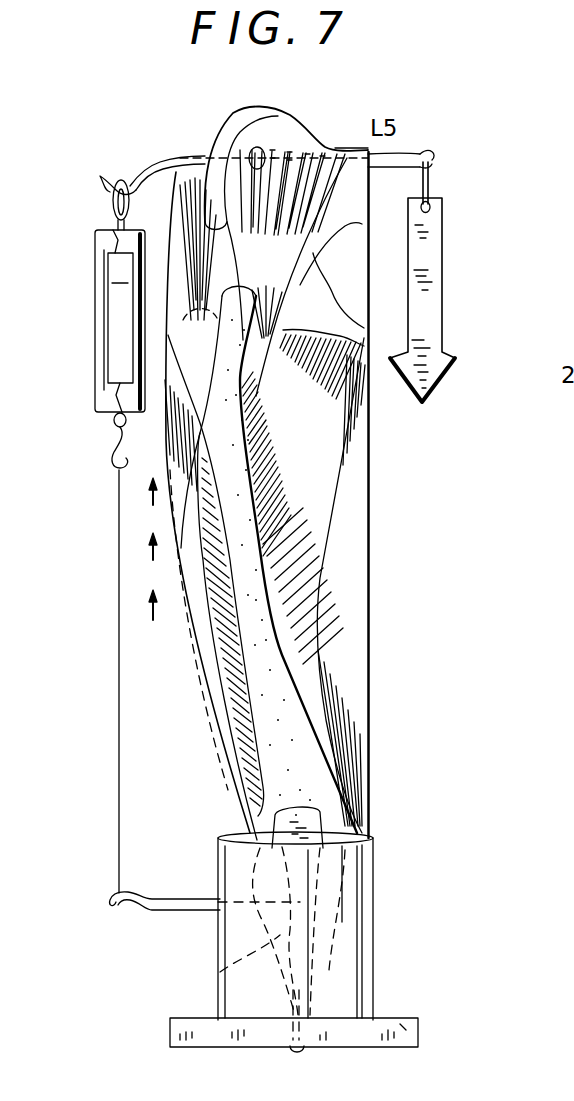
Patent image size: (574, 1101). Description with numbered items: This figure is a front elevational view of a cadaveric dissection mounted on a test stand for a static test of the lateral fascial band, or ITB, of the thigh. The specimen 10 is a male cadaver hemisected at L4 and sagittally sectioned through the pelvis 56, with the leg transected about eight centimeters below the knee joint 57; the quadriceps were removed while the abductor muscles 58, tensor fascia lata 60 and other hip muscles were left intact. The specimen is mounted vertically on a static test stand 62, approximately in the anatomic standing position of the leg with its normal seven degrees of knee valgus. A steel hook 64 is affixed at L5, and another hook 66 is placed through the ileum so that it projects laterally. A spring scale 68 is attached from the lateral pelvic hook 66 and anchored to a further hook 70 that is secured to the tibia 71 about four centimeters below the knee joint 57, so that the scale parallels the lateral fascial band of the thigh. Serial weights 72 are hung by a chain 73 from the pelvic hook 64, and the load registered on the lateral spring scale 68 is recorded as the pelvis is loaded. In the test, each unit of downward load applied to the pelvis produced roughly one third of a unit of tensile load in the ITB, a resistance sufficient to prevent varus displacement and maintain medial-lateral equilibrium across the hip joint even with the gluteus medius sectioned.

The tissue specimen 10 is at (322, 592).
The pelvis 56 is at (297, 112).
The knee joint 57 is at (323, 880).
The abductor muscles 58 is at (322, 481).
The tensor fascia lata 60 is at (161, 441).
The static test stand 62 is at (398, 1022).
The steel hook 64 is at (420, 152).
The hook 66 is at (162, 154).
The spring scale 68 is at (97, 298).
The hook 70 is at (146, 903).
The tibia 71 is at (212, 978).
The serial weights 72 is at (444, 298).
The chain 73 is at (432, 190).